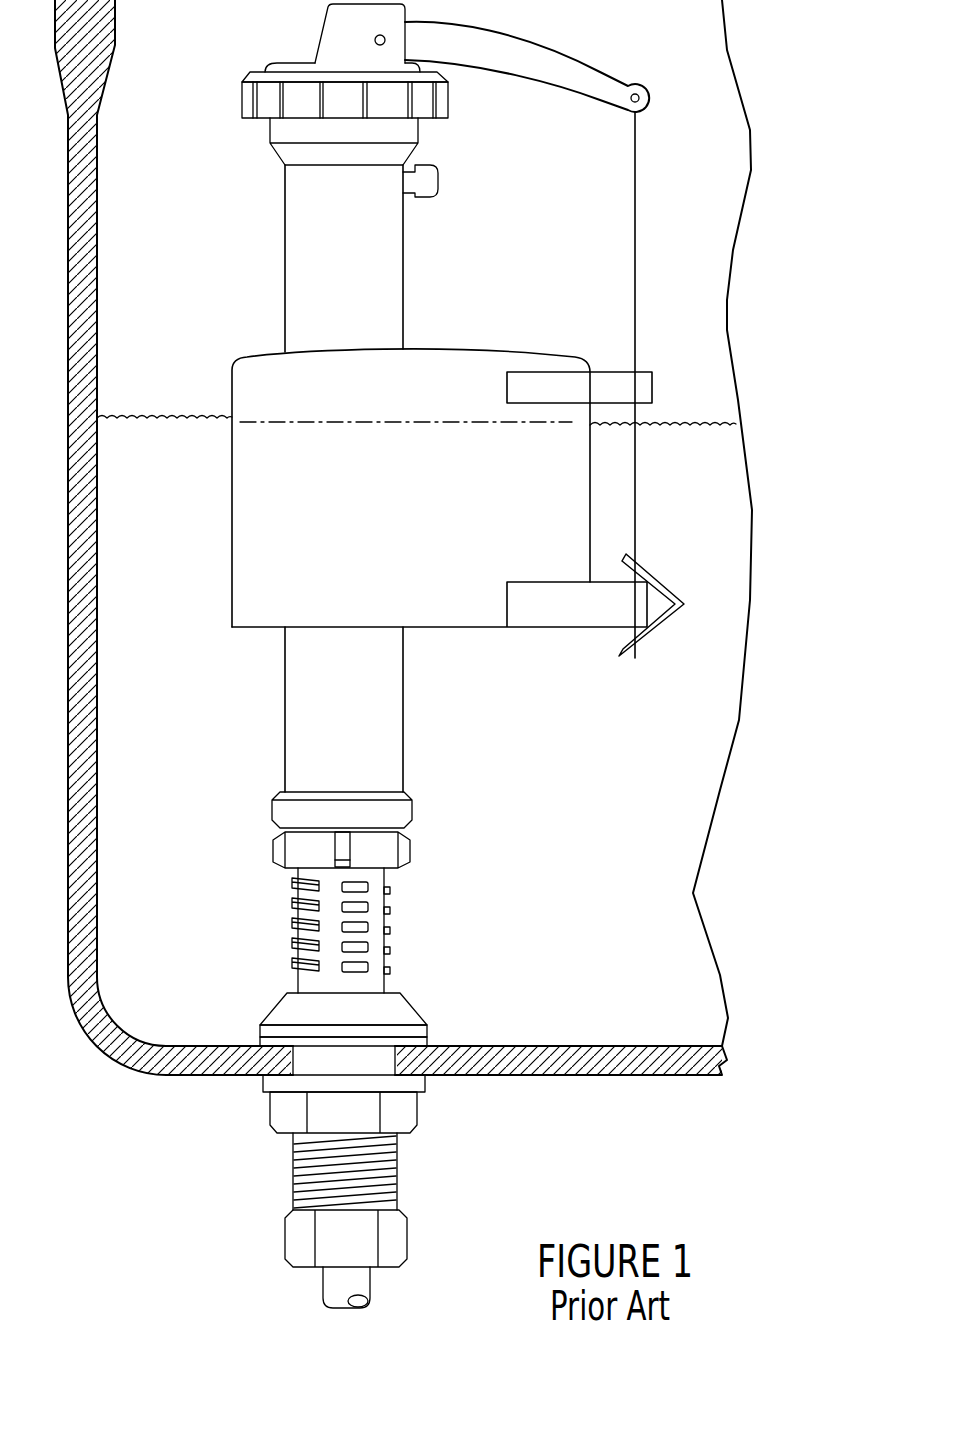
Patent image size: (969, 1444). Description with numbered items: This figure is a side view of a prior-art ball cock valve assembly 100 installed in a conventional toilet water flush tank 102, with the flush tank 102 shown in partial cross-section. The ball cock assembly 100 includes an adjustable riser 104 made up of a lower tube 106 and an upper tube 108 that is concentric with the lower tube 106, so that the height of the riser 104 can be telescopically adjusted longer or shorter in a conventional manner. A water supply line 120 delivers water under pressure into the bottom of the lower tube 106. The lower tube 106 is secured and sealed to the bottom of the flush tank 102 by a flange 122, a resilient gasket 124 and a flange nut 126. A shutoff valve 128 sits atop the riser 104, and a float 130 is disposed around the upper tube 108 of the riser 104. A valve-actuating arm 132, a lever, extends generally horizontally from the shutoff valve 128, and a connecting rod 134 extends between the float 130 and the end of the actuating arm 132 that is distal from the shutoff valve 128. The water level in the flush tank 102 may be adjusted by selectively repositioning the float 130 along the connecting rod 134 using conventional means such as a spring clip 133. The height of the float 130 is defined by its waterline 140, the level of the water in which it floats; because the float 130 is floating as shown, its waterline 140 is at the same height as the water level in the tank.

The ball cock valve assembly 100 is at (790, 278).
The flush tank 102 is at (631, 1078).
The adjustable riser 104 is at (270, 228).
The lower tube 106 is at (387, 987).
The upper tube 108 is at (404, 262).
The water supply line 120 is at (360, 1284).
The flange 122 is at (401, 1020).
The resilient gasket 124 is at (270, 1043).
The flange nut 126 is at (275, 1112).
The shutoff valve 128 is at (262, 150).
The float 130 is at (231, 481).
The valve-actuating arm 132 is at (621, 73).
The spring clip 133 is at (662, 623).
The connecting rod 134 is at (633, 190).
The waterline 140 is at (282, 418).